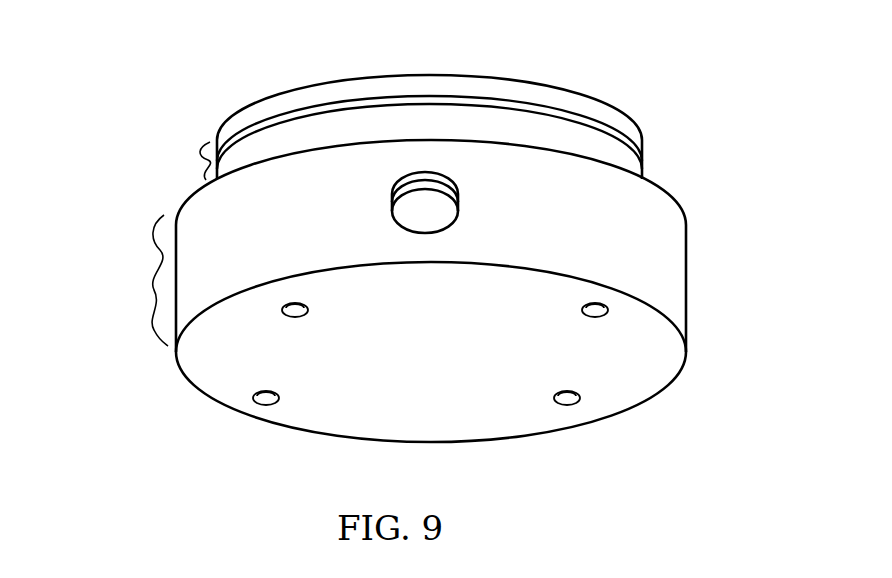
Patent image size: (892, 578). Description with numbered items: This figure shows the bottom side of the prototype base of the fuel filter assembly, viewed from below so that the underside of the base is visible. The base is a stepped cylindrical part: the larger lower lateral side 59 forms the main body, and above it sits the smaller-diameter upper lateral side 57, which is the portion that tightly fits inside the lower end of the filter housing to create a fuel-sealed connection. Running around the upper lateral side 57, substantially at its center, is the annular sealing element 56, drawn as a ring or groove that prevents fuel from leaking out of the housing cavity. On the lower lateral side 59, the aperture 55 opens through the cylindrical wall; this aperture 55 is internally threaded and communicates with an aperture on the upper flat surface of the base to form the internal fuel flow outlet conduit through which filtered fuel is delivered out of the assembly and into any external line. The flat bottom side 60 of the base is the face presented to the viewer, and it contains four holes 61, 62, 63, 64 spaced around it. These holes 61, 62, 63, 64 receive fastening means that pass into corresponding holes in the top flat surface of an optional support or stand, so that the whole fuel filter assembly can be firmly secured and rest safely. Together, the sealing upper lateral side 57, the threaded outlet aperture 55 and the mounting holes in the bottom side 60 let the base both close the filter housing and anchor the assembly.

The aperture 55 is at (427, 212).
The annular sealing element 56 is at (482, 101).
The upper lateral side 57 is at (199, 160).
The lower lateral side 59 is at (150, 288).
The bottom side 60 is at (660, 350).
The hole 61 is at (574, 405).
The hole 62 is at (258, 404).
The hole 63 is at (284, 315).
The hole 64 is at (605, 316).